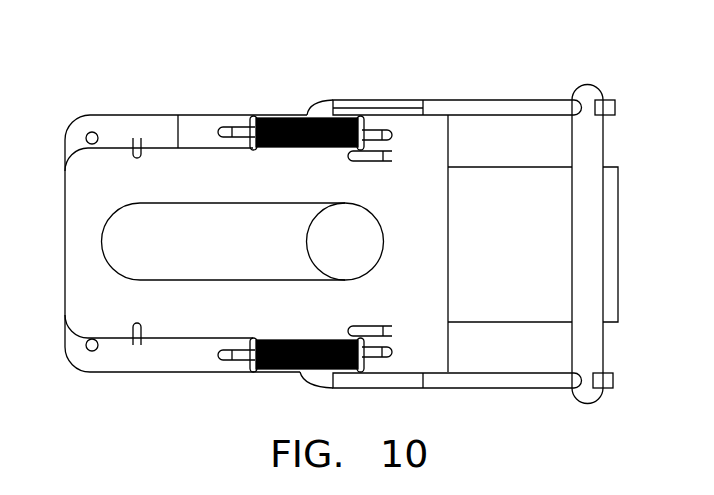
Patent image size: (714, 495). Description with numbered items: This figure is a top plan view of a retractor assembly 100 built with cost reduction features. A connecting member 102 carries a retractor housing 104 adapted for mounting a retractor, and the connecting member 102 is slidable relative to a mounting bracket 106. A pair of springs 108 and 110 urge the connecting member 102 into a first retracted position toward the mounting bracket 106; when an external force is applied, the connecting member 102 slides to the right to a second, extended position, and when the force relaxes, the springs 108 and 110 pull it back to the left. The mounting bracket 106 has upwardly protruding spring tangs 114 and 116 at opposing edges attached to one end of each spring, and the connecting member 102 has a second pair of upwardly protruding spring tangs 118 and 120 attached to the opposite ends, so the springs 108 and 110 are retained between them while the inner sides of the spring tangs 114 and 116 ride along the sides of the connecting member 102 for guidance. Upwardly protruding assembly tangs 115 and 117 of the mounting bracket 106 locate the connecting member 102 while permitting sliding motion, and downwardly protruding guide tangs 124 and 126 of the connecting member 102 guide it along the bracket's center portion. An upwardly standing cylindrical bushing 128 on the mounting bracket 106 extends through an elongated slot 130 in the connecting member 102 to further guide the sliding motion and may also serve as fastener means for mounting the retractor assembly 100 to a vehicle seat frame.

The retractor assembly 100 is at (486, 76).
The connecting member 102 is at (178, 115).
The retractor housing 104 is at (547, 389).
The mounting bracket 106 is at (68, 130).
The spring 108 is at (290, 120).
The spring 110 is at (284, 368).
The spring tang 114 is at (235, 125).
The assembly tang 115 is at (137, 158).
The spring tang 116 is at (232, 360).
The assembly tang 117 is at (137, 323).
The spring tang 118 is at (373, 128).
The spring tang 120 is at (365, 369).
The guide tang 124 is at (367, 161).
The guide tang 126 is at (362, 326).
The cylindrical bushing 128 is at (362, 252).
The elongated slot 130 is at (197, 203).